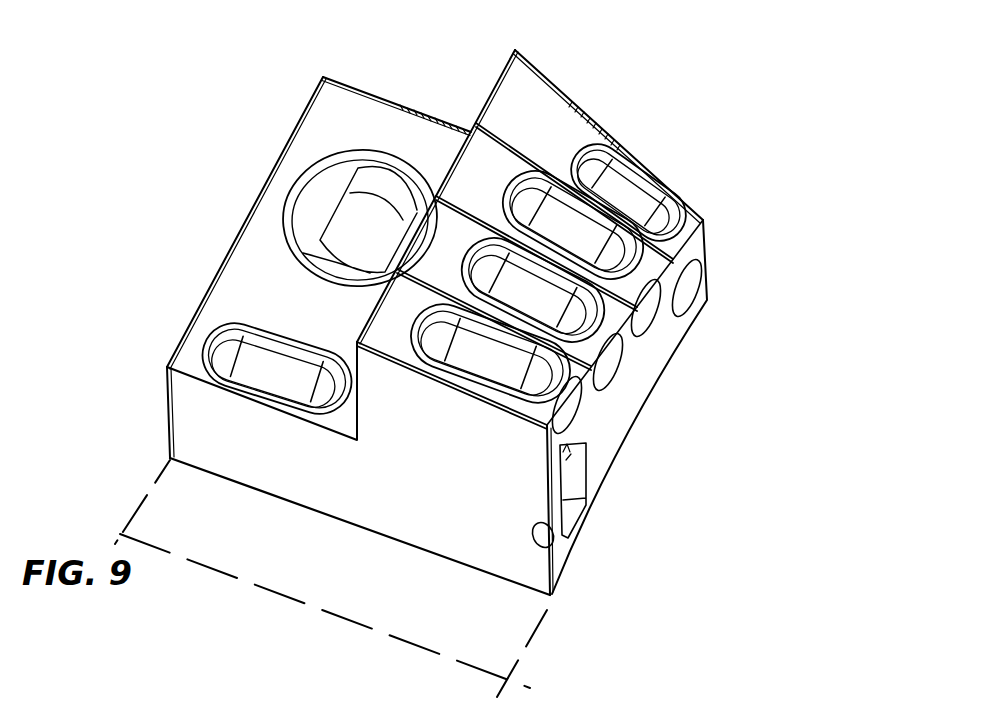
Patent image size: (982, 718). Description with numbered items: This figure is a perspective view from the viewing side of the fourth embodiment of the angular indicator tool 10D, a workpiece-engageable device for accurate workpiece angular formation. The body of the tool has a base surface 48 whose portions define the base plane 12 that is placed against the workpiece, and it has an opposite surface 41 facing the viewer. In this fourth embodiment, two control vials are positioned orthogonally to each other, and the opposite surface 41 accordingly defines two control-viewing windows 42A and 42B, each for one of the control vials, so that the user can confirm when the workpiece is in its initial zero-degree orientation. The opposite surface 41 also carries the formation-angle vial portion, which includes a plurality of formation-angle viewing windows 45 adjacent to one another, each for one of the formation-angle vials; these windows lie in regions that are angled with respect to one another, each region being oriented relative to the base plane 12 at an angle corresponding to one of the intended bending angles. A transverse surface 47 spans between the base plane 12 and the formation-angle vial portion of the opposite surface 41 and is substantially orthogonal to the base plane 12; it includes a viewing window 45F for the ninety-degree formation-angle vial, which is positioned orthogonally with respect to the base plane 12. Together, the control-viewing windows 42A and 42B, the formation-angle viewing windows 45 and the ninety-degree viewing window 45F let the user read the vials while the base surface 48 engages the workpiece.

The workpiece-engageable device 10D is at (161, 167).
The opposite surface 41 is at (341, 92).
The control-viewing window 42A is at (313, 203).
The control-viewing window 42B is at (230, 352).
The formation-angle viewing windows 45 is at (627, 203).
The viewing window 45F is at (578, 542).
The transverse surface 47 is at (597, 457).
The base surface 48 is at (452, 558).
The base plane 12 is at (324, 584).